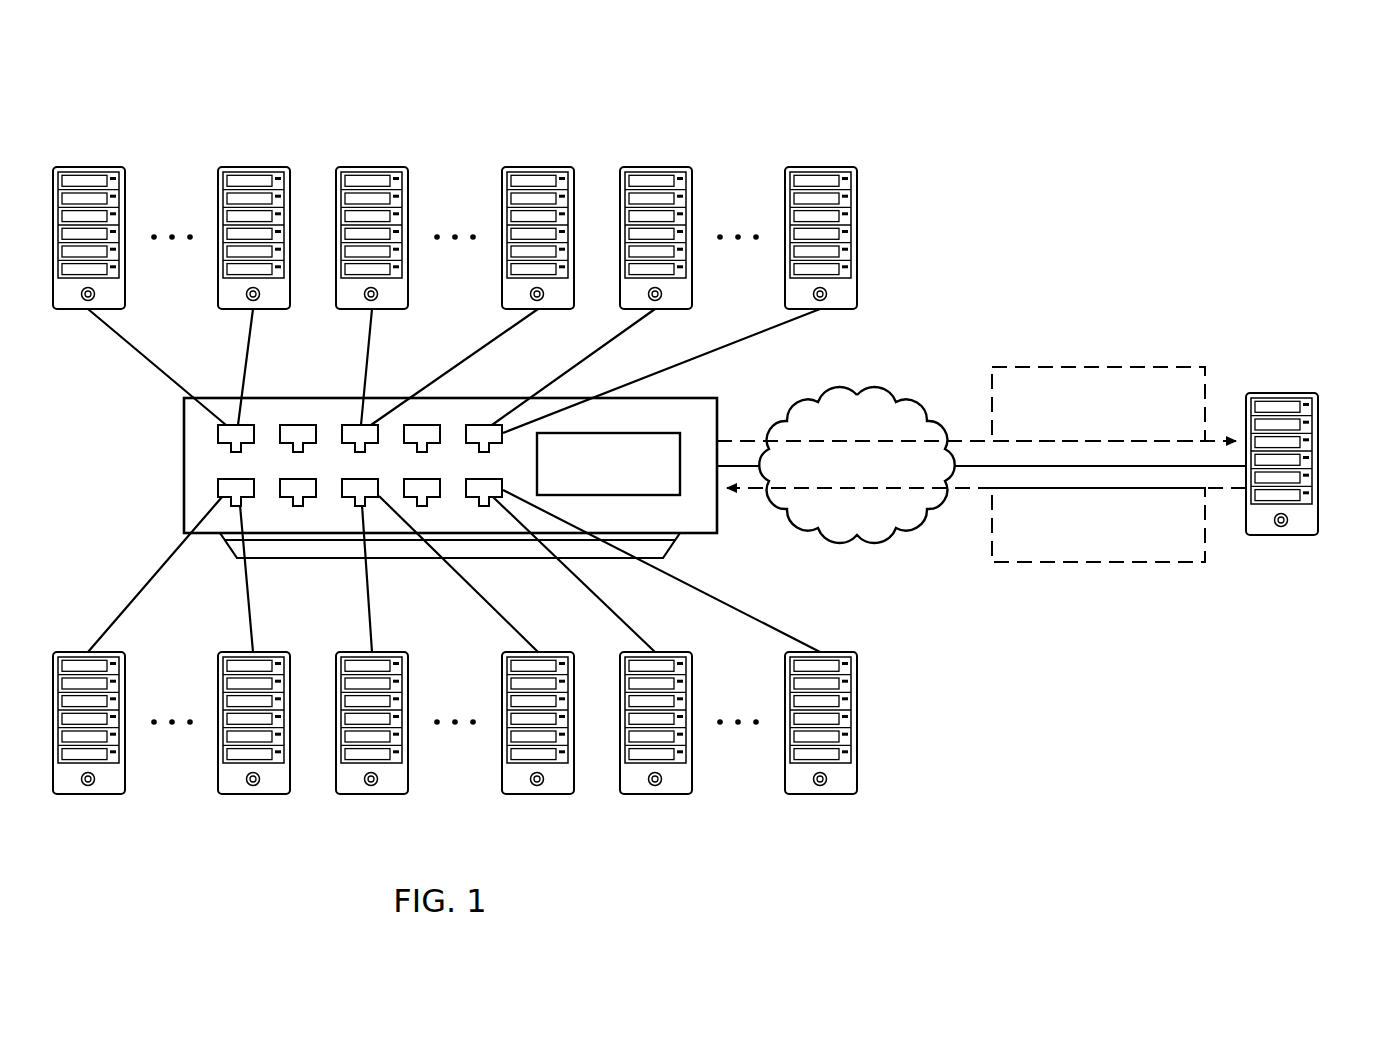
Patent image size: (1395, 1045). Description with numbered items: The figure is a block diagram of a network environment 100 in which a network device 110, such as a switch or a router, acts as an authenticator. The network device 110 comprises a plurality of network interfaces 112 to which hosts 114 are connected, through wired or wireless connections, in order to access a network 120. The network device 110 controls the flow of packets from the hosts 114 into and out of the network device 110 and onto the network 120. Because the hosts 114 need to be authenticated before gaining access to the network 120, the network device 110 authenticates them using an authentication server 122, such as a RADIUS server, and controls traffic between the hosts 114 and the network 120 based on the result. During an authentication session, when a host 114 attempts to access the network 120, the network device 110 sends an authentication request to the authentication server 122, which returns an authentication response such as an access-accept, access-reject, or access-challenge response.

The network environment 100 is at (1108, 114).
The network device 110 is at (404, 480).
The network interfaces 112 is at (218, 433).
The hosts 114 is at (88, 166).
The network 120 is at (862, 542).
The authentication server 122 is at (1282, 393).